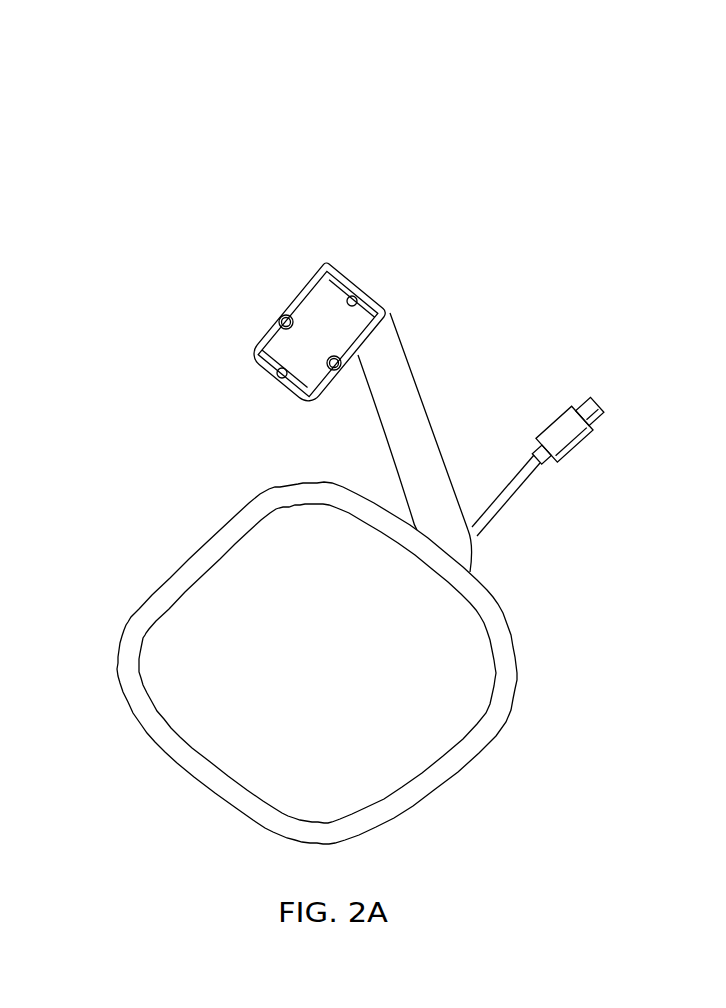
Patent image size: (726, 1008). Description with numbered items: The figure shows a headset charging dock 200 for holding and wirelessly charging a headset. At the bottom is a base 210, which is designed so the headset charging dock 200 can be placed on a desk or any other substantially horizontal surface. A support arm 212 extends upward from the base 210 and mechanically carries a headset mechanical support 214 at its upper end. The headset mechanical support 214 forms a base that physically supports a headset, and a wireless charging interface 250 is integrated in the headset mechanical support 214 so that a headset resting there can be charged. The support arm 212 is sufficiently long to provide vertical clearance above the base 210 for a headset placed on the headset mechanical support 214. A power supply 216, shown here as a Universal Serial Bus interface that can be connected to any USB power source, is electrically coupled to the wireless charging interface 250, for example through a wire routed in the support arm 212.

The headset charging dock 200 is at (483, 131).
The base 210 is at (493, 685).
The support arm 212 is at (403, 395).
The headset mechanical support 214 is at (313, 307).
The power supply 216 is at (507, 503).
The wireless charging interface 250 is at (371, 311).